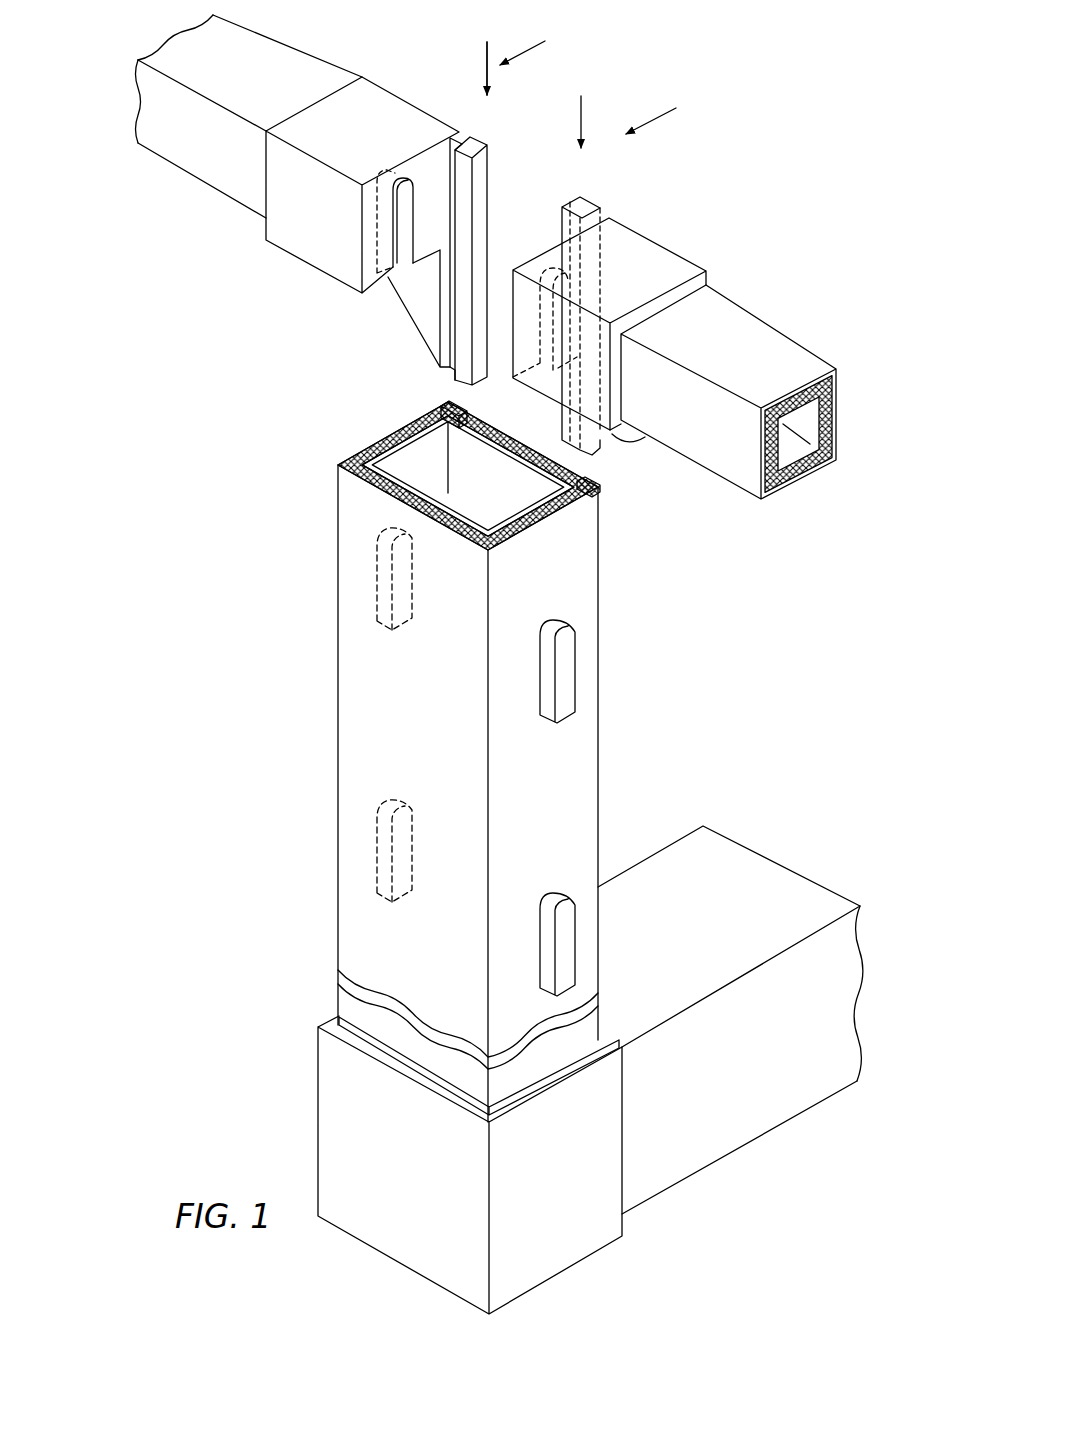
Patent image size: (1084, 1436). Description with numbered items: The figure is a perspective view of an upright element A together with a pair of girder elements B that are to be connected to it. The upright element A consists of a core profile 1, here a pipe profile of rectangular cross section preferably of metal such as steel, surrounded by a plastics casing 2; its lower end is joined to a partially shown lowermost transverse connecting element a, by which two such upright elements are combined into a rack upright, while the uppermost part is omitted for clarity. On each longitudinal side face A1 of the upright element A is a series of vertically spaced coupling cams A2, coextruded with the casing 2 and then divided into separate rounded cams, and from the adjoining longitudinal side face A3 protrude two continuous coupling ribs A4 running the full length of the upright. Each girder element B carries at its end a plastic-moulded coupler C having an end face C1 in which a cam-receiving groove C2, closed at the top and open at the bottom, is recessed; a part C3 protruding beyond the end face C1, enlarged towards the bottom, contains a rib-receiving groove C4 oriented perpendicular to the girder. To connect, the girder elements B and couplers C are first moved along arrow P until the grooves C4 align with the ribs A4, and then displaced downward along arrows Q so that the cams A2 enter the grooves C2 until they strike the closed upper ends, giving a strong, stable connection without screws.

The upright element A is at (431, 752).
The longitudinal side face A1 is at (546, 819).
The coupling cams A2 is at (565, 687).
The adjoining longitudinal side face A3 is at (533, 462).
The coupling rib A4 is at (507, 457).
The core profile 1 is at (545, 522).
The plastics casing 2 is at (512, 497).
The girder element B is at (178, 182).
The coupler C is at (515, 232).
The end face C1 is at (425, 173).
The cam-receiving groove C2 is at (397, 223).
The protruding part C3 is at (483, 230).
The rib-receiving groove C4 is at (455, 142).
The arrow P is at (597, 75).
The arrow Q is at (536, 81).
The transverse connecting element a is at (715, 1129).